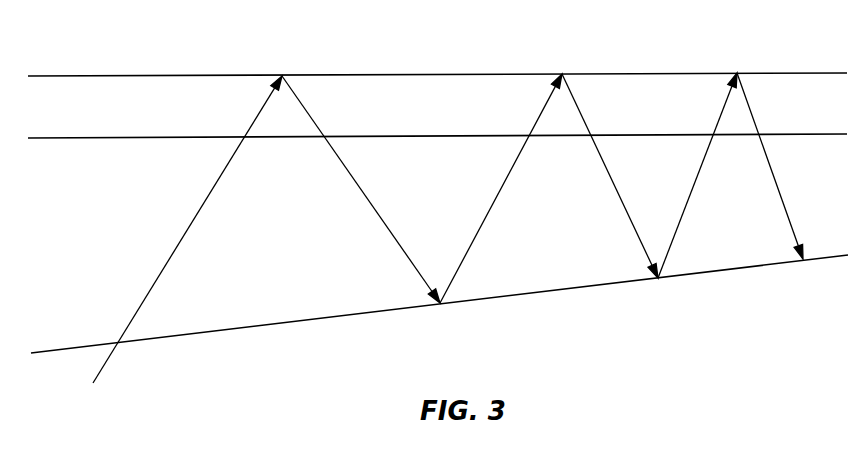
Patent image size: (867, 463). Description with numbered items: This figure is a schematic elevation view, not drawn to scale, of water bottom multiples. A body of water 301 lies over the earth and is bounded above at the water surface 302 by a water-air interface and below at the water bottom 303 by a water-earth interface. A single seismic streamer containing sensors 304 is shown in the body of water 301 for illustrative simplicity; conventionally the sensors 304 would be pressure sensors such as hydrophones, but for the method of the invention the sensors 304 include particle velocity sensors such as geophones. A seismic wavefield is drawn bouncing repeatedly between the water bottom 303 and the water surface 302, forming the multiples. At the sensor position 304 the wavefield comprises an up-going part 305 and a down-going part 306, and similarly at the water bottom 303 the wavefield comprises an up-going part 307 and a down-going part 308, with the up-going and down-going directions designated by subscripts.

The body of water 301 is at (109, 226).
The water surface 302 is at (408, 73).
The water bottom 303 is at (188, 332).
The sensors 304 is at (423, 136).
The up-going part of wavefield at sensor position 305 is at (243, 133).
The down-going part of wavefield at sensor position 306 is at (327, 135).
The up-going part of wavefield at water bottom 307 is at (450, 286).
The down-going part of wavefield at water bottom 308 is at (433, 297).